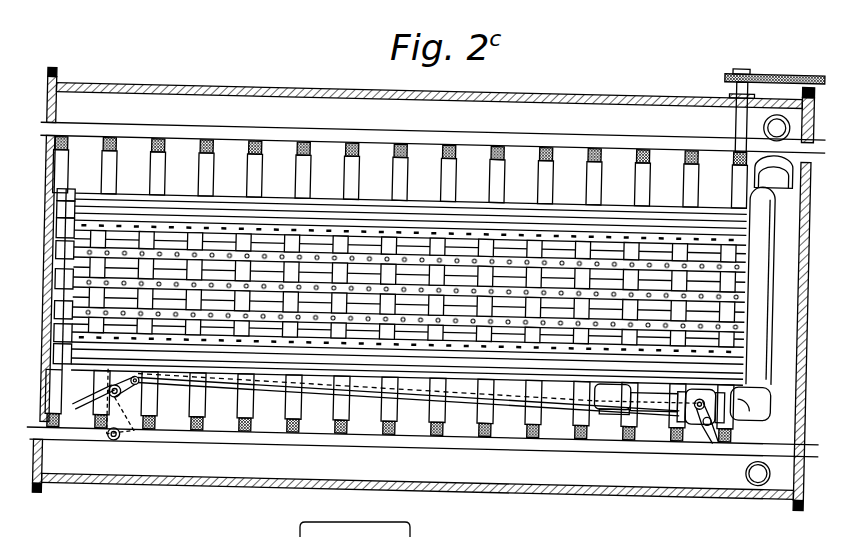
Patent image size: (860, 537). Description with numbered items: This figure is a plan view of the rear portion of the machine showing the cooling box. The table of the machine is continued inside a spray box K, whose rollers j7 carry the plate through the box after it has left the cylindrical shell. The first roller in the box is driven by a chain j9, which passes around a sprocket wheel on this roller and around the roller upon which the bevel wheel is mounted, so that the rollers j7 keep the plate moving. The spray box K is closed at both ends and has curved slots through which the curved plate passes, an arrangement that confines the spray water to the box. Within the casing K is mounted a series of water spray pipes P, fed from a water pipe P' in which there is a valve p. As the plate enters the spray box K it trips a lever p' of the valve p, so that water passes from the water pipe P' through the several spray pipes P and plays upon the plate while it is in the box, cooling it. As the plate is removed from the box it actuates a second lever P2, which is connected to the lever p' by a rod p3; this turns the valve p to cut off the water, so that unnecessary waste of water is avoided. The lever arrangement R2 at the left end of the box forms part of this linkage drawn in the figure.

The spray box K is at (429, 83).
The rollers j7 is at (396, 289).
The chain j9 is at (774, 106).
The water spray pipes P is at (432, 262).
The lever P2 is at (612, 399).
The valve p is at (646, 399).
The water pipe P' is at (750, 404).
The lever p' is at (700, 435).
The lever arm R2 is at (92, 389).
The rod p3 is at (329, 400).